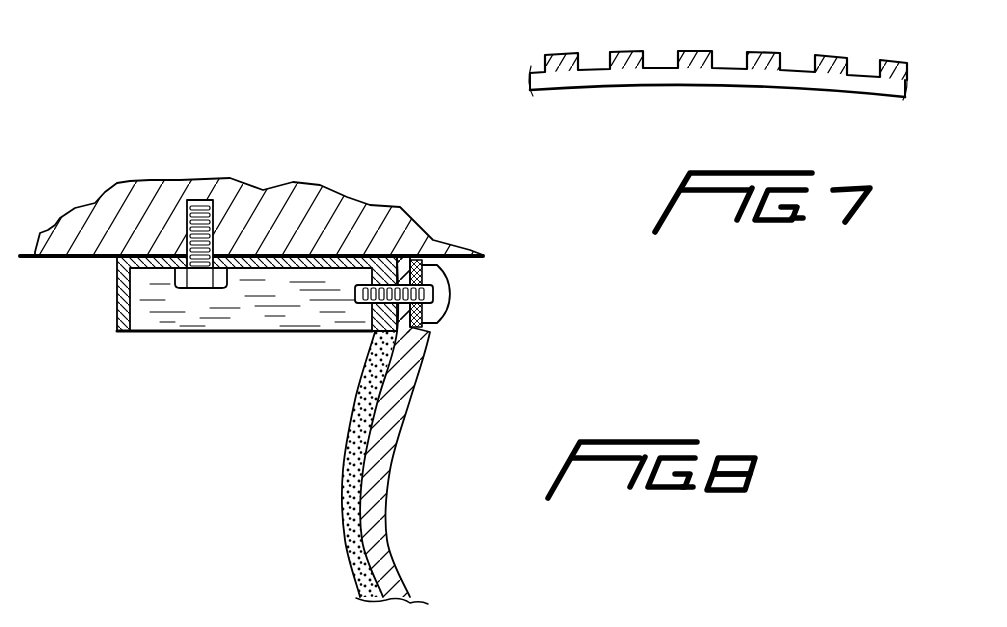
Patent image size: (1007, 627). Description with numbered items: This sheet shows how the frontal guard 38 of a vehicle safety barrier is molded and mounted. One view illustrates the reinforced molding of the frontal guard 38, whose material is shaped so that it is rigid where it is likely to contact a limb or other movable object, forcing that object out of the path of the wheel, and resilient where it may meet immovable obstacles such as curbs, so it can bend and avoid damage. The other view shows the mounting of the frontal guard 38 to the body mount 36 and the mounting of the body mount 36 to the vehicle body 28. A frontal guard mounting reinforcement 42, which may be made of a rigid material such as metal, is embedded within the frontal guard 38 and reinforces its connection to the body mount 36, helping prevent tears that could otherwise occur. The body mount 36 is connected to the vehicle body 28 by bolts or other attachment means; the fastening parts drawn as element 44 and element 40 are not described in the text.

In FIG. 8, the vehicle body 28 is at (318, 190).
In FIG. 8, the body mount 36 is at (120, 303).
In FIG. 7, the frontal guard 38 is at (557, 80).
In FIG. 8, the frontal guard 38 is at (378, 472).
In FIG. 8, the fastener 40 is at (437, 310).
In FIG. 8, the frontal guard mounting reinforcement 42 is at (437, 270).
In FIG. 8, the bolt 44 is at (203, 200).